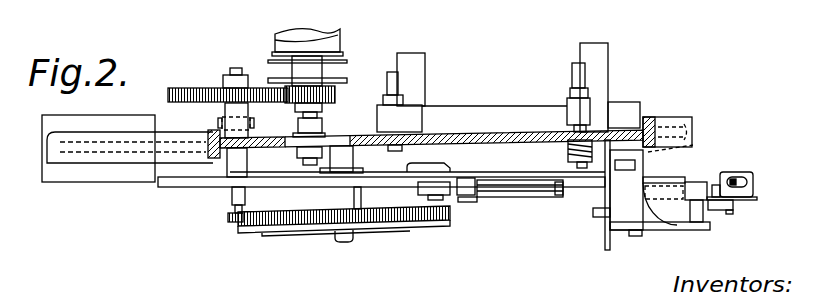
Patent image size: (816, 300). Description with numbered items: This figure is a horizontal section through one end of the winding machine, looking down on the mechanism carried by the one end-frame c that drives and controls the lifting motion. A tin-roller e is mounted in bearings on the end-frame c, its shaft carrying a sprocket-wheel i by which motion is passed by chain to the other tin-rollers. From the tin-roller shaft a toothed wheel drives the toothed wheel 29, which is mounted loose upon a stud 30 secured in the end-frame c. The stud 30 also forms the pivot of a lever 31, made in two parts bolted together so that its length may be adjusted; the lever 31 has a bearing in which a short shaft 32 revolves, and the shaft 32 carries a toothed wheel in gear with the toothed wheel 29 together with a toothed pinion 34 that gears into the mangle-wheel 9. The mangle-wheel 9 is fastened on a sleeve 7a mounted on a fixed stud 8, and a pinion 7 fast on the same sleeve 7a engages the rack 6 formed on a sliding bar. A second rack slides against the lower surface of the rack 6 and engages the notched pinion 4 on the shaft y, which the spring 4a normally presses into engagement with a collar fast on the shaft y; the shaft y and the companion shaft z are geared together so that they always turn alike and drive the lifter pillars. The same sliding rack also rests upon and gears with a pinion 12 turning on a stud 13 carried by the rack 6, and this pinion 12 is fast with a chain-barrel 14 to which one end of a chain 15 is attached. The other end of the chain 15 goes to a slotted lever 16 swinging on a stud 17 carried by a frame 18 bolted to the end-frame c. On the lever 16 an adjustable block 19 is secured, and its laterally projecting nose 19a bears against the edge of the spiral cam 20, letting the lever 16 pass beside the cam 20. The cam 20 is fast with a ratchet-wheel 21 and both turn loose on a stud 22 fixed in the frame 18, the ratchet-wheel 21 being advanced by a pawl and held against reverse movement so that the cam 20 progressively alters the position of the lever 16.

The pinion 4 is at (553, 165).
The spring 4a is at (563, 153).
The rack 6 is at (202, 186).
The pinion 7 is at (327, 190).
The sleeve 7a is at (347, 196).
The fixed stud 8 is at (343, 243).
The mangle-wheel 9 is at (443, 201).
The pinion 12 is at (455, 172).
The stud 13 is at (462, 200).
The chain-barrel 14 is at (417, 188).
The chain 15 is at (490, 188).
The lever 16 is at (741, 169).
The stud 17 is at (698, 180).
The frame 18 is at (693, 143).
The block 19 is at (742, 203).
The projecting arm or nose 19a is at (710, 217).
The cam 20 is at (677, 207).
The ratchet-wheel 21 is at (593, 212).
The stud 22 is at (635, 236).
The toothed wheel 29 is at (228, 81).
The stud 30 is at (233, 109).
The lever 31 is at (221, 120).
The short shaft 32 is at (228, 214).
The toothed pinion 34 is at (233, 223).
The end-frame c is at (656, 119).
The tin-roller e is at (307, 85).
The sprocket-wheel i is at (312, 67).
The shaft y is at (569, 80).
The shaft z is at (386, 80).